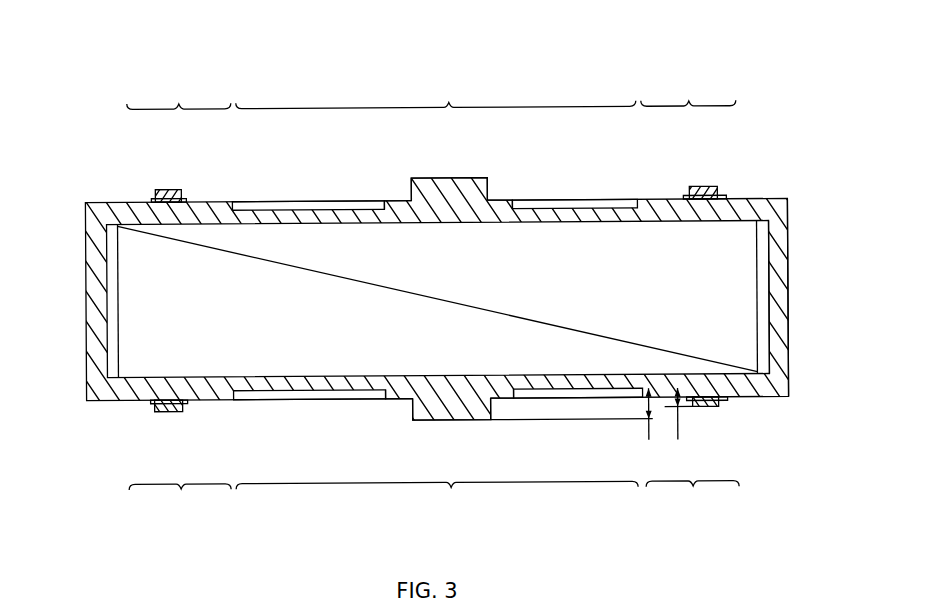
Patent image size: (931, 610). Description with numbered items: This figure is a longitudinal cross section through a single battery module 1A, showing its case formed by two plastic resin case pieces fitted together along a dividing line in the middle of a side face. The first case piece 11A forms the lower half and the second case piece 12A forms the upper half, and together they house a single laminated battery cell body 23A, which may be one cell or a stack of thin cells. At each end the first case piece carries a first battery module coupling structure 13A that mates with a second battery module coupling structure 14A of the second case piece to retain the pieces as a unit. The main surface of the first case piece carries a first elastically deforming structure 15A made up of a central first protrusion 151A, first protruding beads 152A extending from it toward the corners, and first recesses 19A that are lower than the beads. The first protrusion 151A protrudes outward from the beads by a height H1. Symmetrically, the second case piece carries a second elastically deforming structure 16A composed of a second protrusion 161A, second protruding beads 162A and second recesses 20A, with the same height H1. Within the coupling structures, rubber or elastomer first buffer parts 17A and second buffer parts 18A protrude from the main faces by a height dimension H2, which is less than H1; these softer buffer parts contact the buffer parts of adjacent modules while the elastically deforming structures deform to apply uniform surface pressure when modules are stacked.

The battery module 1A is at (744, 73).
The first case piece 11A is at (789, 339).
The second case piece 12A is at (789, 236).
The first battery module coupling structure 13A is at (434, 503).
The second battery module coupling structure 14A is at (431, 92).
The first elastically deforming structure 15A is at (437, 502).
The second elastically deforming structure 16A is at (436, 92).
The first buffer part 17A is at (168, 410).
The second buffer part 18A is at (172, 188).
The first recess 19A is at (301, 398).
The second recess 20A is at (312, 201).
The laminated battery cell body 23A is at (727, 284).
The first protrusion 151A is at (448, 420).
The first protruding bead 152A is at (399, 398).
The second protrusion 161A is at (448, 178).
The second protruding bead 162A is at (399, 200).
The height of protrusion H1 is at (575, 428).
The height dimension of buffer part H2 is at (678, 427).